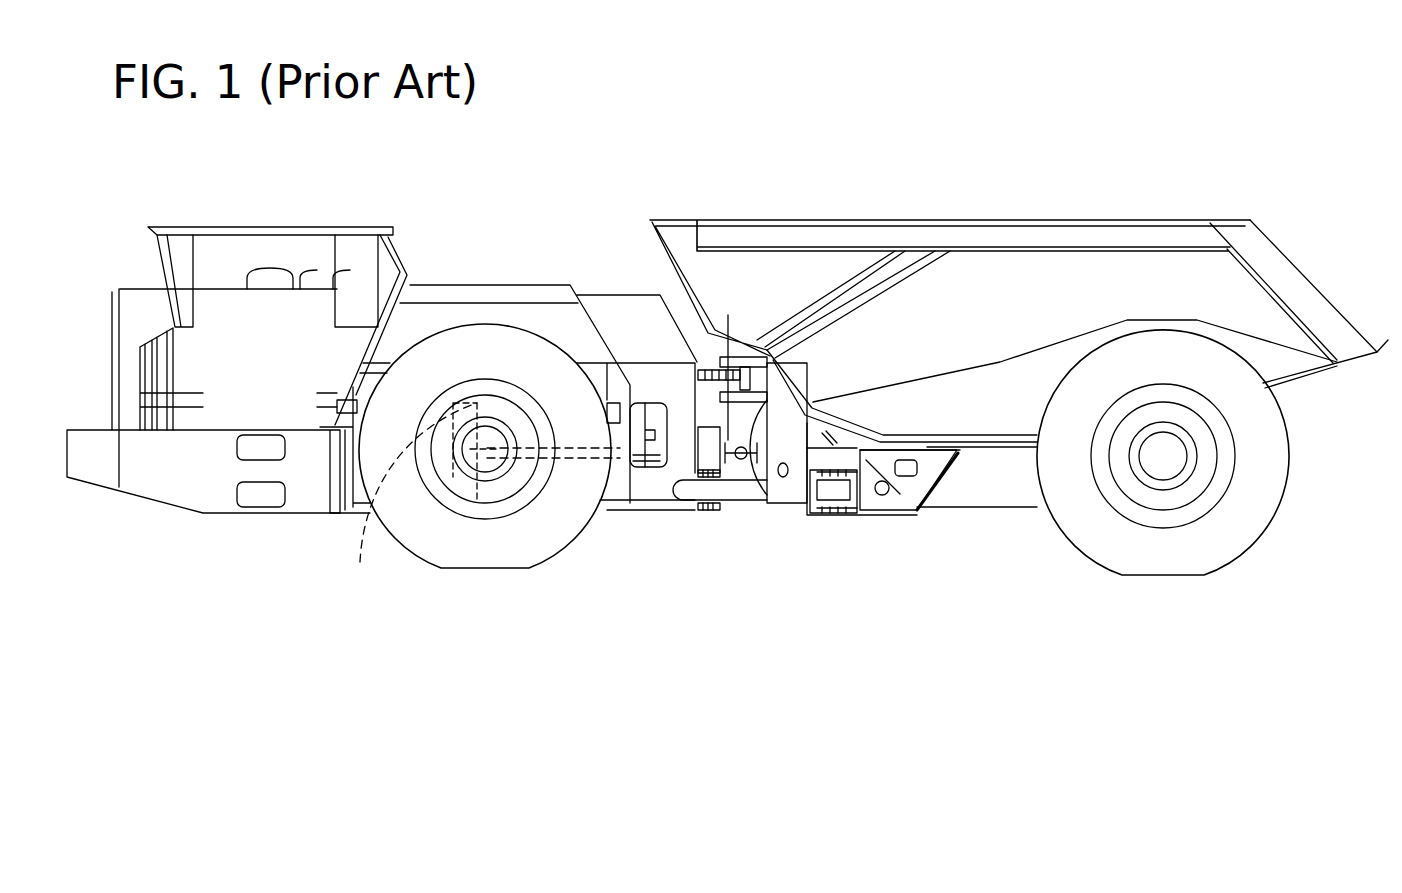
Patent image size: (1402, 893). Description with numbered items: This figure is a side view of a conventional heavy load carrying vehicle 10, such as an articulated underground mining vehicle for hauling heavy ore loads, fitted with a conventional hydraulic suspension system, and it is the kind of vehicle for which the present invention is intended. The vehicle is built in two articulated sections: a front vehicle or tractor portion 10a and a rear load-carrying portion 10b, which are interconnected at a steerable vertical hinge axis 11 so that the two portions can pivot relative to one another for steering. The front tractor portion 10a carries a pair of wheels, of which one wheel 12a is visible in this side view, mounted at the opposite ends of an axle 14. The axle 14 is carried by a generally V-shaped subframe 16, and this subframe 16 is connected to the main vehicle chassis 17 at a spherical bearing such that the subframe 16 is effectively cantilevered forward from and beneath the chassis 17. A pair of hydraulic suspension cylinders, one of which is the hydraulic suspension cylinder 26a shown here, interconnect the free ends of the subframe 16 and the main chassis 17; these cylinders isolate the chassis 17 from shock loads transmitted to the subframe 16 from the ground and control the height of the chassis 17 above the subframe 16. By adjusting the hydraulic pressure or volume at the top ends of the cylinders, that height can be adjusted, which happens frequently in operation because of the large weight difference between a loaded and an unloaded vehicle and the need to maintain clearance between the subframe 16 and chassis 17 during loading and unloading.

The heavy load carrying vehicle 10 is at (750, 122).
The front vehicle or tractor portion 10a is at (323, 227).
The rear load-carrying portion 10b is at (1007, 232).
The steerable vertical hinge axis 11 is at (728, 315).
The wheel 12a is at (538, 547).
The axle 14 is at (478, 455).
The subframe 16 is at (580, 452).
The main vehicle chassis 17 is at (293, 493).
The hydraulic suspension cylinder 26a is at (406, 500).